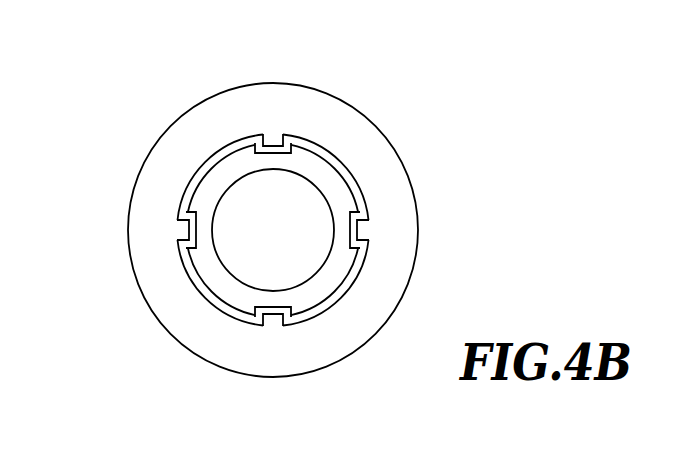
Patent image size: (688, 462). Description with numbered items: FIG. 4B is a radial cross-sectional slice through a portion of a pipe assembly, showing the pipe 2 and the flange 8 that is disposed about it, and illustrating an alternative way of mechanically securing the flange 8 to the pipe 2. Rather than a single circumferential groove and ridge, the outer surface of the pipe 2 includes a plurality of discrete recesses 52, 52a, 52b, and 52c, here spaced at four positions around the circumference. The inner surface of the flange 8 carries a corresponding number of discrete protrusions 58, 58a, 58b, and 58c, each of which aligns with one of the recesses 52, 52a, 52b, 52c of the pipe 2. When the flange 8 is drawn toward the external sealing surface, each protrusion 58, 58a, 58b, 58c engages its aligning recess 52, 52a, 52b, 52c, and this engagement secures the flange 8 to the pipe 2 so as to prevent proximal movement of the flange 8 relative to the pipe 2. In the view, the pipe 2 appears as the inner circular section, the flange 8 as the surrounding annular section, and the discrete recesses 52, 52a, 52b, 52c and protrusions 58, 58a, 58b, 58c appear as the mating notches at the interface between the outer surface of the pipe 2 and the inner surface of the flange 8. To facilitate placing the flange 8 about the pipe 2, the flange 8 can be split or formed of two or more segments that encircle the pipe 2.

The pipe 2 is at (223, 173).
The flange 8 is at (155, 181).
The recess 52 is at (353, 233).
The recess 52a is at (285, 150).
The recess 52b is at (192, 245).
The recess 52c is at (260, 322).
The protrusion 58 is at (365, 232).
The protrusion 58a is at (273, 135).
The protrusion 58b is at (183, 230).
The protrusion 58c is at (273, 323).